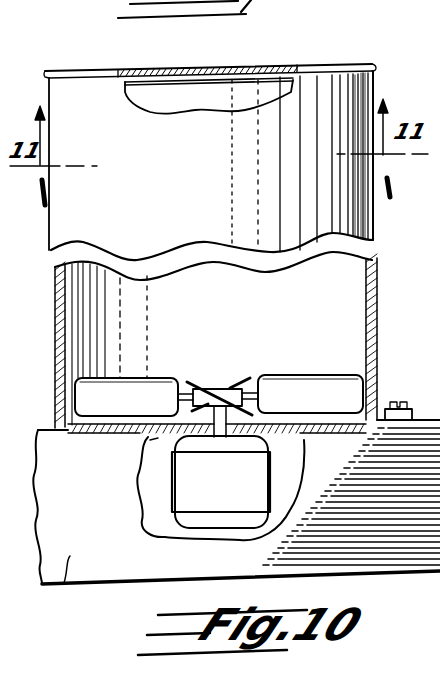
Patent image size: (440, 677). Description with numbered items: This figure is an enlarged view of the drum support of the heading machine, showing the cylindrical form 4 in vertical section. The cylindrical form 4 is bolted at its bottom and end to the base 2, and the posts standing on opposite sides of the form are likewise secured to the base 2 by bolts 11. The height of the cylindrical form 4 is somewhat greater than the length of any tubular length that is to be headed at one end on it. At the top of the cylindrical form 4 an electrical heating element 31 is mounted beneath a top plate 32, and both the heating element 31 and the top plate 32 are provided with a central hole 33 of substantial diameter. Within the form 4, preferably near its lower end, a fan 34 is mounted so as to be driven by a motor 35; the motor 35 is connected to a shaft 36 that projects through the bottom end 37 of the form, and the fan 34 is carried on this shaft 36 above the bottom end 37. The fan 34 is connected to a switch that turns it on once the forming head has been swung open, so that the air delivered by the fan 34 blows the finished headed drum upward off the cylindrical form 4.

The base 2 is at (62, 586).
The cylindrical form 4 is at (379, 312).
The bolts 11 is at (398, 402).
The electrical heating element 31 is at (210, 81).
The top plate 32 is at (333, 69).
The central hole 33 is at (166, 71).
The fan 34 is at (298, 388).
The motor 35 is at (172, 505).
The shaft 36 is at (222, 438).
The bottom end 37 is at (156, 440).